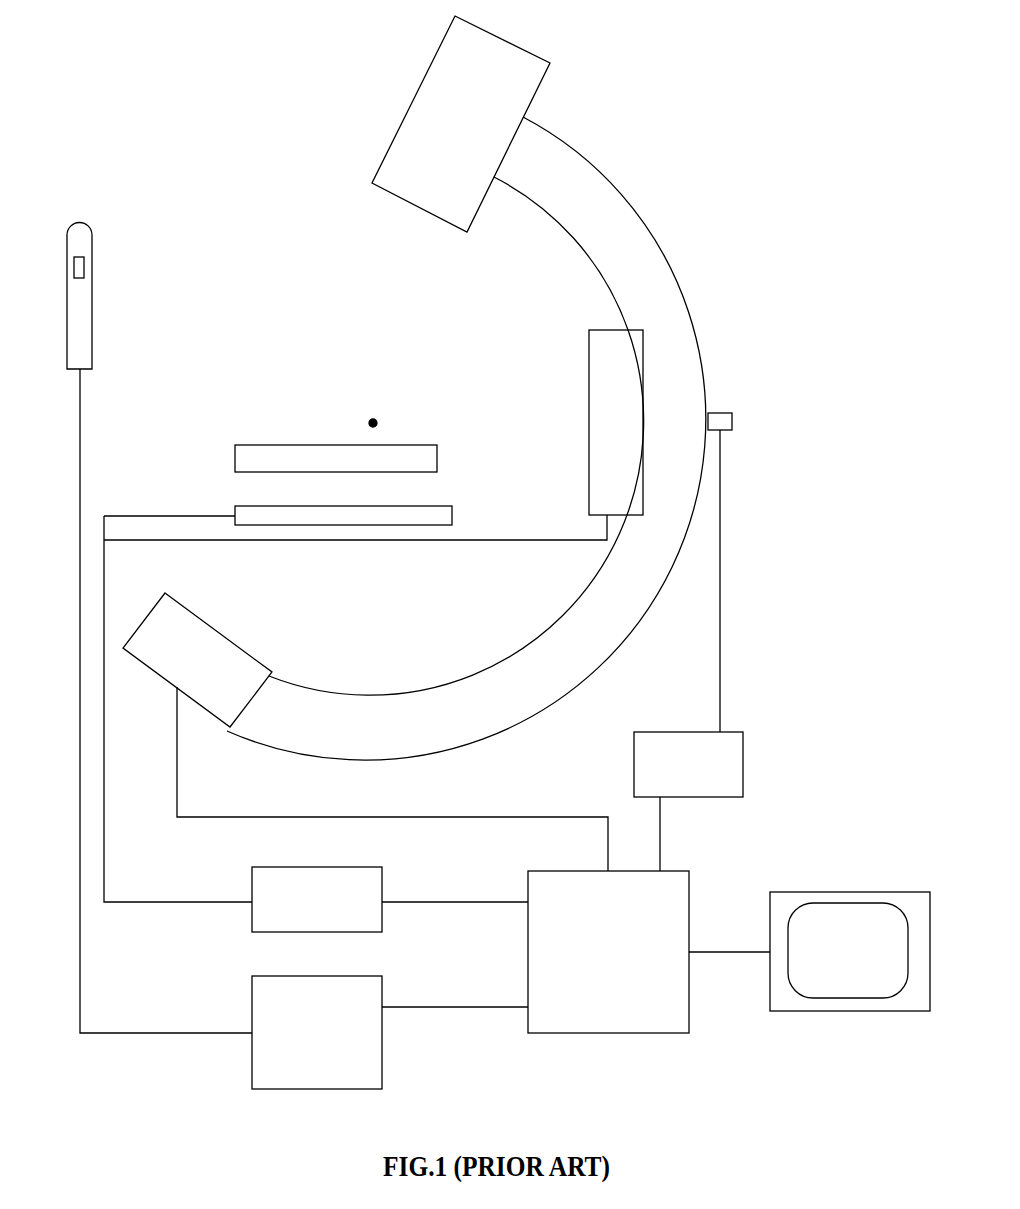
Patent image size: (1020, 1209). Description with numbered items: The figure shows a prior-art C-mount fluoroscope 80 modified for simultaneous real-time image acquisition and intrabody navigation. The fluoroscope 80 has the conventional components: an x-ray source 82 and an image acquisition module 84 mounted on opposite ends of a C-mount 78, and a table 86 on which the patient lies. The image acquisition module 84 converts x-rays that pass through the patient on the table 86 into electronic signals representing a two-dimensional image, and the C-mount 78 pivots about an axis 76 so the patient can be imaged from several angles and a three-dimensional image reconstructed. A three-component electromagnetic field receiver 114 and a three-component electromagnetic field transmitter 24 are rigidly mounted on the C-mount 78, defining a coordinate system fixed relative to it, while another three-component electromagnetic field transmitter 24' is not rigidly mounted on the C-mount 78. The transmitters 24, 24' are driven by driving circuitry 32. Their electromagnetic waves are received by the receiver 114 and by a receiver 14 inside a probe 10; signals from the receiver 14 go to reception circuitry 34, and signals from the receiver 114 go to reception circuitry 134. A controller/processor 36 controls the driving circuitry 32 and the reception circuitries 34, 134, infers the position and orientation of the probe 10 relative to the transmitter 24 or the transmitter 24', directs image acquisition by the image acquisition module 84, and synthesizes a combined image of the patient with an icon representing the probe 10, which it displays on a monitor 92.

The probe 10 is at (92, 232).
The receiver 14 is at (84, 265).
The three-component electromagnetic field transmitter 24 is at (616, 422).
The three-component electromagnetic field transmitter 24' is at (381, 518).
The driving circuitry 32 is at (326, 912).
The reception circuitry 34 is at (326, 1044).
The controller/processor 36 is at (618, 965).
The axis 76 is at (373, 419).
The C-mount 78 is at (651, 294).
The C-mount fluoroscope 80 is at (731, 107).
The x-ray source 82 is at (471, 138).
The image acquisition module 84 is at (207, 672).
The table 86 is at (245, 446).
The monitor 92 is at (862, 892).
The three-component electromagnetic field receiver 114 is at (732, 421).
The reception circuitry 134 is at (704, 776).